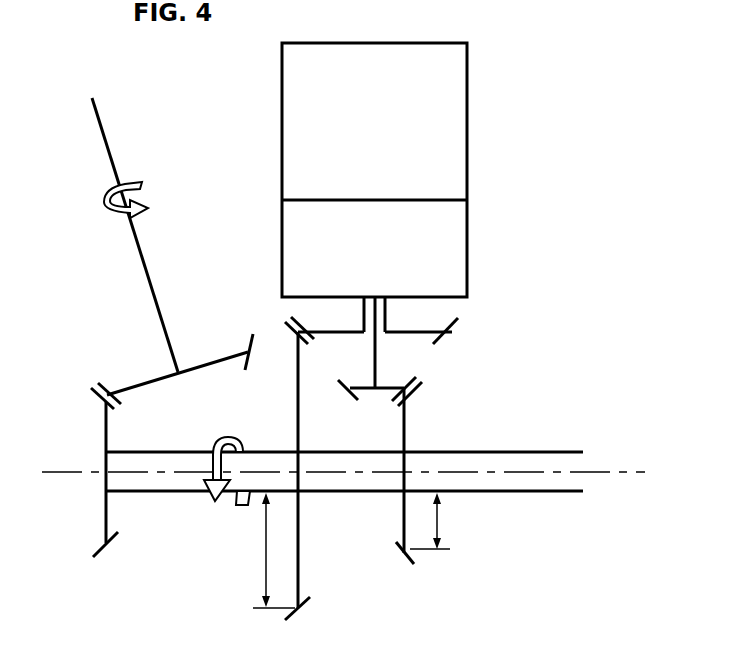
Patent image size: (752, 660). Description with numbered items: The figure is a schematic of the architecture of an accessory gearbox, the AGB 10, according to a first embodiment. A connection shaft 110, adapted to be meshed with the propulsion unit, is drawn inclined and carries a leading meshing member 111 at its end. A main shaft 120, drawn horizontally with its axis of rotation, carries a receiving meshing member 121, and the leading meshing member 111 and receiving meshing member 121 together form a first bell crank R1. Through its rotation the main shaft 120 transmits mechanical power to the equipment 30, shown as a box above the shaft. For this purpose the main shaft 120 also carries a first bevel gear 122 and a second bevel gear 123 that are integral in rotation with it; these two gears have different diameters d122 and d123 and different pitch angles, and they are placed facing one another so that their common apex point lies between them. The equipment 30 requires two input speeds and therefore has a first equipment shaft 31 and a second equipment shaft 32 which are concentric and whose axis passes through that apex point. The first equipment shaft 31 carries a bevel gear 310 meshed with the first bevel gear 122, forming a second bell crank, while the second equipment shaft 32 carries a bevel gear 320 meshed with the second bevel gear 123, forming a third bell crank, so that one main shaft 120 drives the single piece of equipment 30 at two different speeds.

The AGB 10 is at (547, 375).
The equipment 30 is at (468, 138).
The first equipment shaft 31 is at (385, 313).
The second equipment shaft 32 is at (372, 350).
The bevel gear 310 is at (458, 327).
The bevel gear 320 is at (413, 383).
The connection shaft 110 is at (152, 280).
The leading meshing member 111 is at (207, 363).
The main shaft 120 is at (520, 493).
The receiving meshing member 121 is at (113, 540).
The first bevel gear 122 is at (307, 602).
The second bevel gear 123 is at (398, 545).
The first bell crank R1 is at (81, 370).
The diameter of the first bevel gear d122 is at (256, 550).
The diameter of the second bevel gear d123 is at (452, 521).